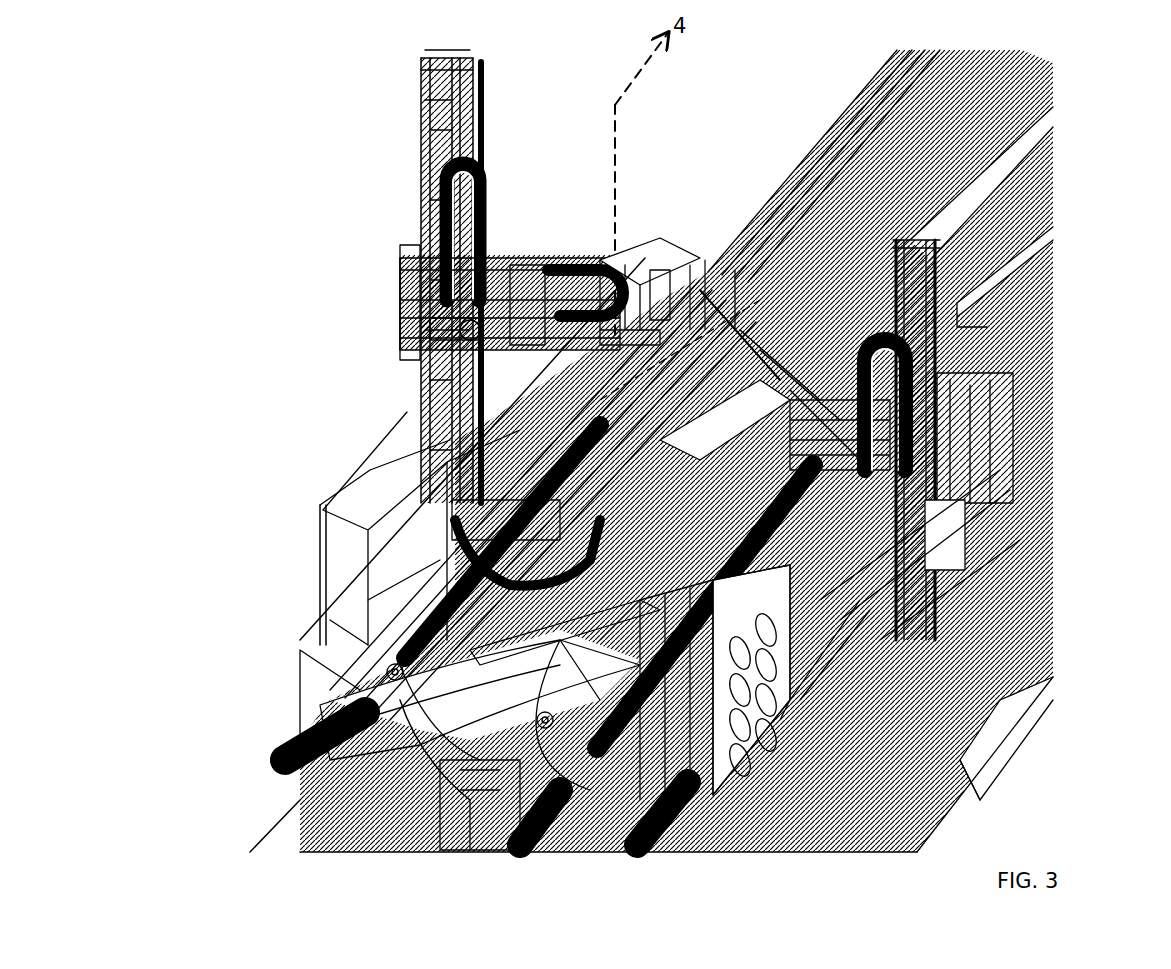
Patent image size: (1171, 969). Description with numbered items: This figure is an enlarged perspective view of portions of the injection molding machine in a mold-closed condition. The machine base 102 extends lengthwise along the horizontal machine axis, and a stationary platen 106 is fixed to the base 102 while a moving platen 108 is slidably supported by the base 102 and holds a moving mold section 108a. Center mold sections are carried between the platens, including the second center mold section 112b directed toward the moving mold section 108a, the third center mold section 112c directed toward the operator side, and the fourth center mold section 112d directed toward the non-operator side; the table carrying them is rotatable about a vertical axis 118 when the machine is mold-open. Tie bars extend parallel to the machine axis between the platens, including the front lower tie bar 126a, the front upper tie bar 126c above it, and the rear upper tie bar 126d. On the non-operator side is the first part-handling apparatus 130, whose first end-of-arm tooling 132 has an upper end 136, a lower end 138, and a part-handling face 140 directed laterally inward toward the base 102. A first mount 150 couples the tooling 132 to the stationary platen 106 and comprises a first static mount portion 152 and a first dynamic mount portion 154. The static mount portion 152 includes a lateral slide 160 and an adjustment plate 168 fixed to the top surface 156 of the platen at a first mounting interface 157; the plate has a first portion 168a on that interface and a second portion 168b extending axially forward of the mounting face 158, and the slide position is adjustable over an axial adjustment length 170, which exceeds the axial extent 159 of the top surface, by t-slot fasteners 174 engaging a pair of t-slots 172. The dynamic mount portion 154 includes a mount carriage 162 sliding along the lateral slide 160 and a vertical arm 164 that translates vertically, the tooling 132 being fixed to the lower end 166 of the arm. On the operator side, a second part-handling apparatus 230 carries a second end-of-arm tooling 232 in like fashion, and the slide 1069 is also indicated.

The machine base 102 is at (845, 100).
The stationary platen 106 is at (935, 548).
The moving platen 108 is at (325, 705).
The moving mold section 108a is at (470, 700).
The second center mold section 112b is at (485, 815).
The third center mold section 112c is at (740, 785).
The fourth center mold section 112d is at (470, 528).
The vertical axis 118 is at (620, 118).
The front lower tie bar 126a is at (658, 848).
The front upper tie bar 126c is at (518, 850).
The rear upper tie bar 126d is at (285, 765).
The first part-handling apparatus 130 is at (268, 142).
The first end-of-arm tooling 132 is at (340, 470).
The upper end 136 is at (325, 498).
The lower end 138 is at (325, 645).
The part-handling face 140 is at (390, 590).
The first mount 150 is at (518, 165).
The first static mount portion 152 is at (588, 248).
The first dynamic mount portion 154 is at (487, 338).
The top surface 156 is at (760, 355).
The first mounting interface 157 is at (730, 345).
The mounting face 158 is at (800, 350).
The axial extent 159 is at (770, 345).
The lateral slide 160 is at (400, 252).
The mount carriage 162 is at (520, 338).
The vertical arm 164 is at (420, 66).
The lower end 166 is at (470, 535).
The adjustment plate 168 is at (685, 260).
The first portion 168a is at (660, 265).
The second portion 168b is at (600, 345).
The axial adjustment length 170 is at (765, 330).
The t-slots 172 is at (625, 265).
The t-slot fasteners 174 is at (690, 262).
The second part-handling apparatus 230 is at (1030, 468).
The second end-of-arm tooling 232 is at (930, 740).
The slide 1069 is at (760, 290).